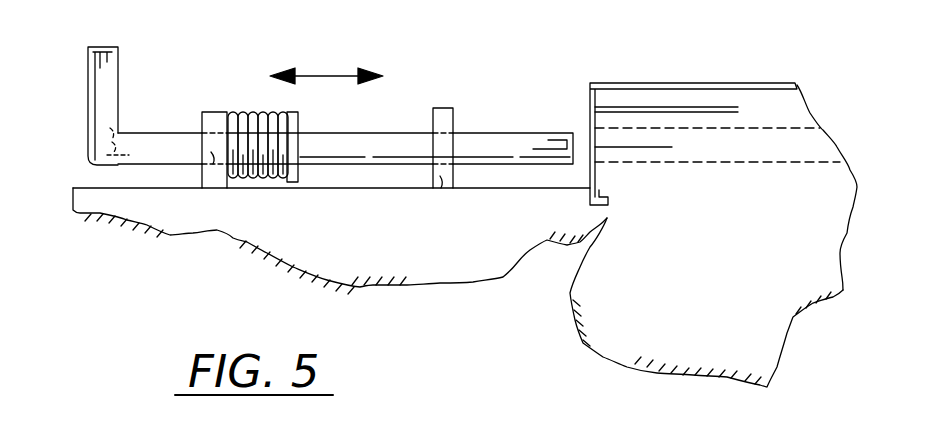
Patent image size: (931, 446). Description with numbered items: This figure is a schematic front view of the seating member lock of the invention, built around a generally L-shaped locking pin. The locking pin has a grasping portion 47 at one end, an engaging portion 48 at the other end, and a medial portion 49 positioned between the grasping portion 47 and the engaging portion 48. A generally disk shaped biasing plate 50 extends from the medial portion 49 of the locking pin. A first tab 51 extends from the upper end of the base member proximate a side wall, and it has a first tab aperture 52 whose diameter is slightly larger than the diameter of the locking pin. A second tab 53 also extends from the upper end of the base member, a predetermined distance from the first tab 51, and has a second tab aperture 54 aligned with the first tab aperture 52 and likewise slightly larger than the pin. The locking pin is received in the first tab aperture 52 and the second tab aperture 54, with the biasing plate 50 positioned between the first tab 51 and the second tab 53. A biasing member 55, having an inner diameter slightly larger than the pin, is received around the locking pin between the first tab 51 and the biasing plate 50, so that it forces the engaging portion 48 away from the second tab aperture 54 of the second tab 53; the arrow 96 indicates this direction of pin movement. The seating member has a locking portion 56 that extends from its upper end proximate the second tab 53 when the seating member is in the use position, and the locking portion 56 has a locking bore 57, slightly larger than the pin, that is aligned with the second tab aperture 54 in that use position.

The grasping portion 47 is at (102, 117).
The engaging portion 48 is at (537, 138).
The medial portion 49 is at (348, 145).
The biasing plate 50 is at (295, 178).
The first tab 51 is at (214, 116).
The first tab aperture 52 is at (214, 157).
The second tab 53 is at (440, 183).
The second tab aperture 54 is at (442, 145).
The biasing member 55 is at (263, 112).
The locking portion 56 is at (752, 110).
The locking bore 57 is at (735, 158).
The direction arrow 96 is at (148, 120).